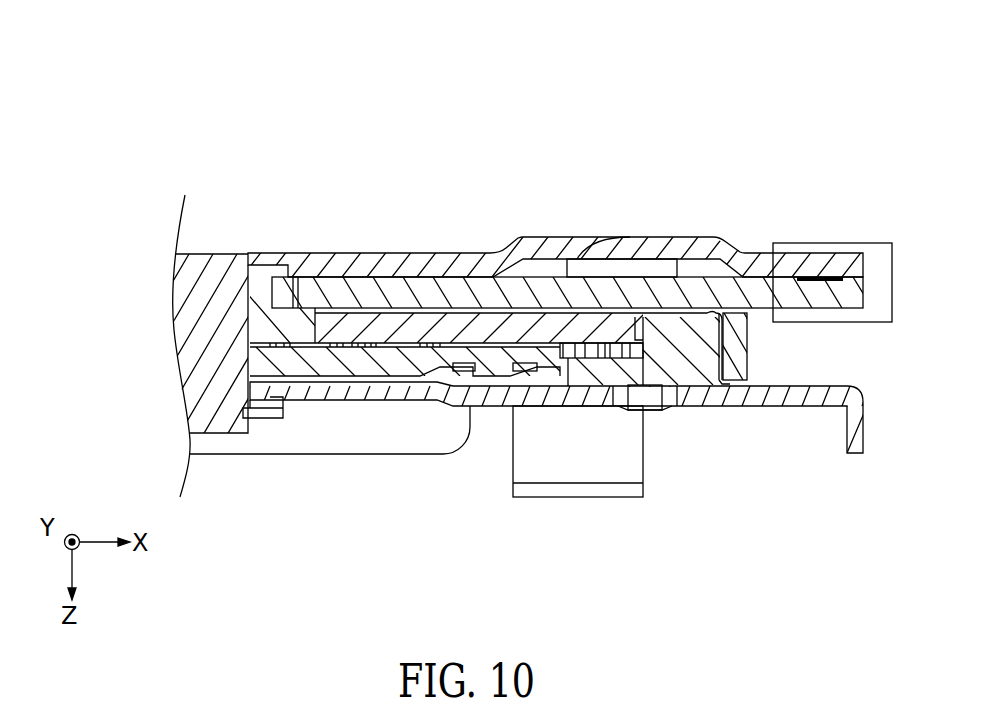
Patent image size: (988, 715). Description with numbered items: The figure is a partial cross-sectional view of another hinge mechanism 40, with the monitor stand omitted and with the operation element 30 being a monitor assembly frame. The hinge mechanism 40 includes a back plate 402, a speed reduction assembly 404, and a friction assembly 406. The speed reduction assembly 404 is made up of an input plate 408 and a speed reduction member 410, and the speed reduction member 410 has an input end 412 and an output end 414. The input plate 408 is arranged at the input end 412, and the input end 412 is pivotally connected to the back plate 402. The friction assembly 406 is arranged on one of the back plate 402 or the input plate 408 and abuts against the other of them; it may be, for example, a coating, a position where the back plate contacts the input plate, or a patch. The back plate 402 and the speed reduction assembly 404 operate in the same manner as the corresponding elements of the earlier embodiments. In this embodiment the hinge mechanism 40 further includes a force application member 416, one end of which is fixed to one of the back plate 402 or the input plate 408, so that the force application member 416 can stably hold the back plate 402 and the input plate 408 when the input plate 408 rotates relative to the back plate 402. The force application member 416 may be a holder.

The hinge mechanism 40 is at (52, 68).
The operation element 30 is at (715, 397).
The back plate 402 is at (760, 265).
The speed reduction assembly 404 is at (430, 148).
The friction assembly 406 is at (810, 282).
The input plate 408 is at (333, 300).
The speed reduction member 410 is at (397, 333).
The input end 412 is at (238, 288).
The output end 414 is at (643, 398).
The force application member 416 is at (880, 258).